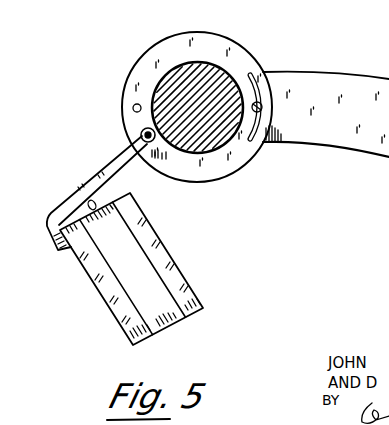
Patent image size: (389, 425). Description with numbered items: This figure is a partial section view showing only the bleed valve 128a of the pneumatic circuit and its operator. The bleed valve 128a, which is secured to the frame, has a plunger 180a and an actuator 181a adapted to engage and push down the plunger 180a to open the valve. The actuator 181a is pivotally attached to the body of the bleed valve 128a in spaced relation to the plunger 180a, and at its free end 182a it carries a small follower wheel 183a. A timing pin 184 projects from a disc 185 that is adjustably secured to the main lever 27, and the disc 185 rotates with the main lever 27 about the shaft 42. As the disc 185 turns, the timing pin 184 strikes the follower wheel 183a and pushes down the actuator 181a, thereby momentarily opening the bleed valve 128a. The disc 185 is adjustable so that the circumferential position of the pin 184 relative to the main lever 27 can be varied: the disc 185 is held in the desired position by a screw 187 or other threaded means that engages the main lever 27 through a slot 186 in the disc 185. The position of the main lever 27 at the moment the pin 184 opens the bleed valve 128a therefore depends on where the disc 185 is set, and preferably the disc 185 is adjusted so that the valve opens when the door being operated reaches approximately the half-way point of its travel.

The disc 185 is at (225, 35).
The shaft 42 is at (215, 153).
The timing pin 184 is at (133, 107).
The slot 186 is at (249, 72).
The screw 187 is at (261, 111).
The main lever 27 is at (346, 149).
The free end 182a is at (141, 156).
The follower wheel 183a is at (141, 133).
The actuator 181a is at (88, 180).
The plunger 180a is at (97, 199).
The bleed valve 128a is at (192, 283).